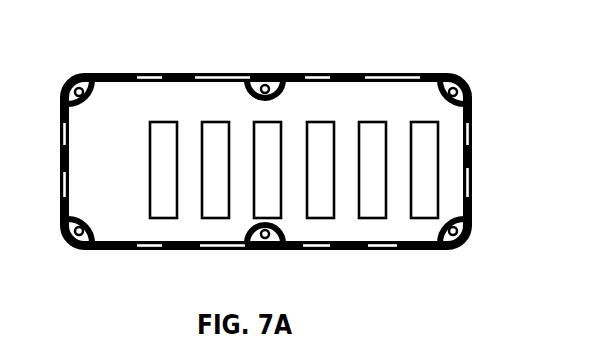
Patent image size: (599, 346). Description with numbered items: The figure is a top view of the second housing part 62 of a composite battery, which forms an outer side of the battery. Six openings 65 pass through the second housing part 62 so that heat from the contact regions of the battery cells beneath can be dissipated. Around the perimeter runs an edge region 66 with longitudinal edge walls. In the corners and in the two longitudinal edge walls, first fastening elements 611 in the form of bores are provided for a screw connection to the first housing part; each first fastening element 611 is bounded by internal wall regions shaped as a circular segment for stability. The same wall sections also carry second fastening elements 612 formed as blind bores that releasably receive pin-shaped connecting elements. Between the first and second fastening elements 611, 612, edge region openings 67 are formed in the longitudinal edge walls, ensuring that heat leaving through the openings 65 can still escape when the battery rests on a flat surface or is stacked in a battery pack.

The second housing part 62 is at (330, 102).
The opening 65 is at (437, 170).
The edge region 66 is at (88, 74).
The edge region opening 67 is at (153, 75).
The first fastening element 611 is at (75, 242).
The second fastening element 612 is at (125, 248).